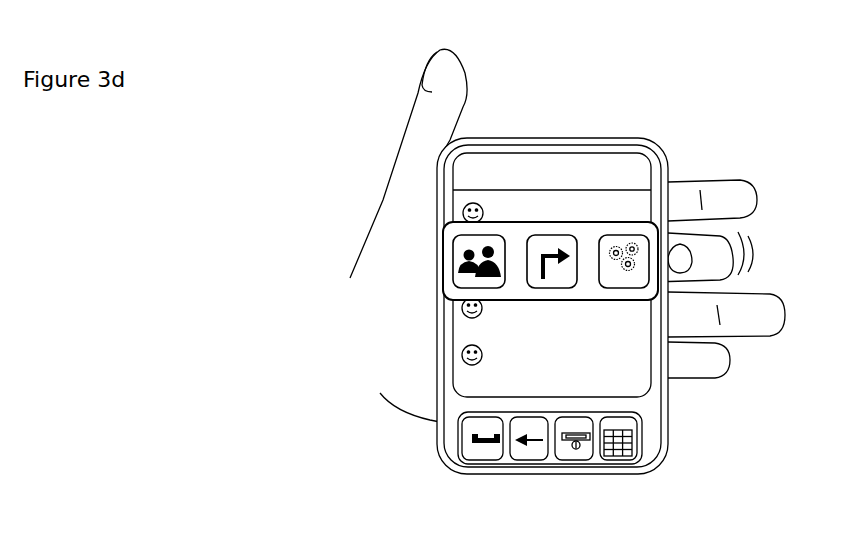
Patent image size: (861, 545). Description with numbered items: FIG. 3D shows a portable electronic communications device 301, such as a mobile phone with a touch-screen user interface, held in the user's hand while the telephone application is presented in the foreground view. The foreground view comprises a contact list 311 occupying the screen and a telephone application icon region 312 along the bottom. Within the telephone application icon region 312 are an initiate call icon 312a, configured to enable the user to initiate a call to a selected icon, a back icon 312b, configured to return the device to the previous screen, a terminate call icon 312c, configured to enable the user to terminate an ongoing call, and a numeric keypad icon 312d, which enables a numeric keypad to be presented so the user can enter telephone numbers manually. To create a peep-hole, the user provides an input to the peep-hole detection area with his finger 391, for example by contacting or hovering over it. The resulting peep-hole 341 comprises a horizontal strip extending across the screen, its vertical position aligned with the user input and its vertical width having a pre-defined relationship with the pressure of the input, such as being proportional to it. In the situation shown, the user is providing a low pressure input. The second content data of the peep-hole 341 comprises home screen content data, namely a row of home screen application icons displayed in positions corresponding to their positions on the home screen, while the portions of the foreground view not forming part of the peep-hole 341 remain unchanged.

The portable electronic communications device 301 is at (240, 70).
The contact list 311 is at (470, 384).
The telephone application icon region 312 is at (460, 418).
The initiate call icon 312a is at (478, 445).
The back icon 312b is at (528, 450).
The terminate call icon 312c is at (577, 448).
The numeric keypad icon 312d is at (630, 450).
The peep-hole 341 is at (622, 293).
The finger 391 is at (683, 245).